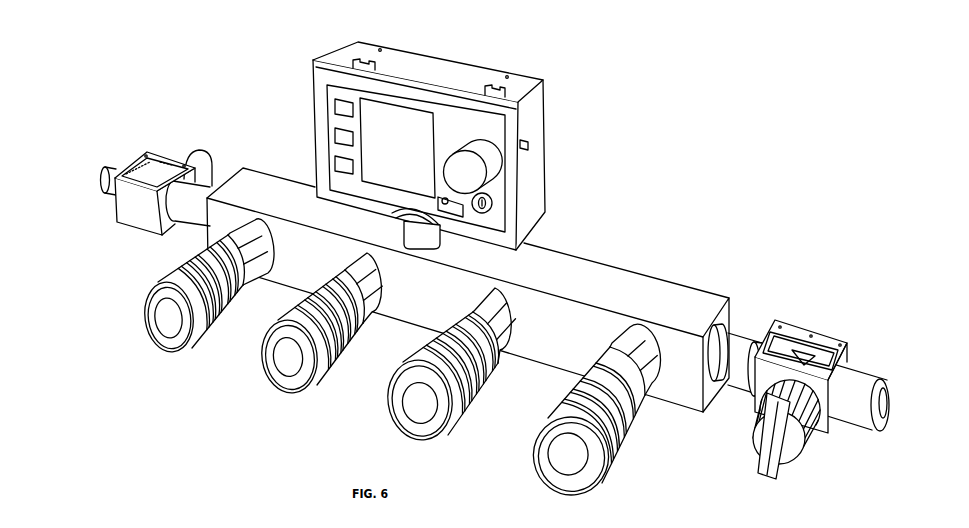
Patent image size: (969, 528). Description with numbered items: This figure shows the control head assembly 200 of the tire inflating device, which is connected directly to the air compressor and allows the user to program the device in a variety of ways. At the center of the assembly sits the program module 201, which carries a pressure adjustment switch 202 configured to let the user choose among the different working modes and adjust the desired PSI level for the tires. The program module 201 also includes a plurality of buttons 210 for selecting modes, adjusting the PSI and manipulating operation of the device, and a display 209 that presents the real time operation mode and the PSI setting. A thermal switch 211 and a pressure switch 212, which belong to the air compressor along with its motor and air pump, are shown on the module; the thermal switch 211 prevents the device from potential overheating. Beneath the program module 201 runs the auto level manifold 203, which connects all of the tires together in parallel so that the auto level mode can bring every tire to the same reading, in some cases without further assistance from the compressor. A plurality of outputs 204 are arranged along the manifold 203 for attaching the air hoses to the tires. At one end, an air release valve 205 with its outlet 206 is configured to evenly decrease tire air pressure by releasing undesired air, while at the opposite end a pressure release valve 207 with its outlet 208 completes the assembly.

The control head assembly 200 is at (263, 53).
The program module 201 is at (527, 112).
The pressure adjustment switch 202 is at (470, 173).
The auto level manifold 203 is at (583, 272).
The outputs 204 is at (160, 325).
The air release valve 205 is at (792, 445).
The outlet 206 is at (863, 393).
The pressure release valve 207 is at (142, 215).
The outlet 208 is at (107, 185).
The display 209 is at (375, 158).
The buttons 210 is at (347, 112).
The thermal switch 211 is at (492, 200).
The pressure switch 212 is at (468, 220).